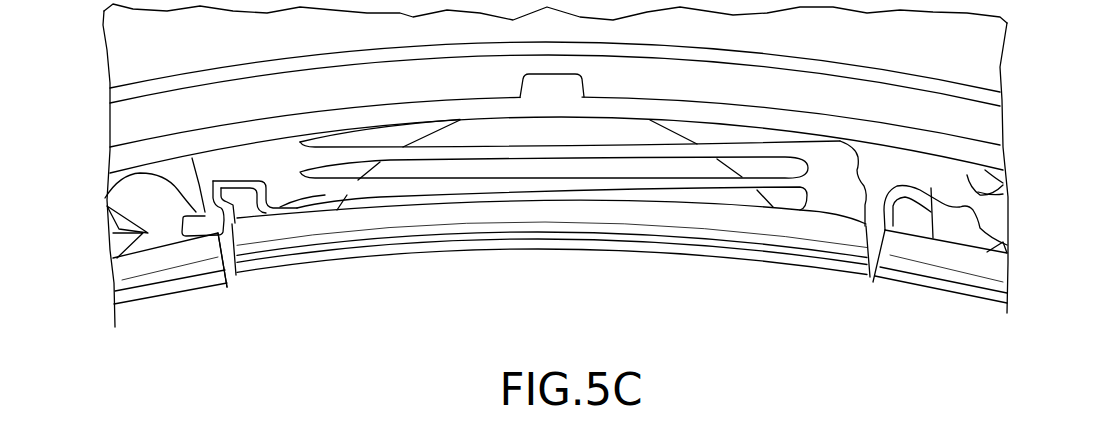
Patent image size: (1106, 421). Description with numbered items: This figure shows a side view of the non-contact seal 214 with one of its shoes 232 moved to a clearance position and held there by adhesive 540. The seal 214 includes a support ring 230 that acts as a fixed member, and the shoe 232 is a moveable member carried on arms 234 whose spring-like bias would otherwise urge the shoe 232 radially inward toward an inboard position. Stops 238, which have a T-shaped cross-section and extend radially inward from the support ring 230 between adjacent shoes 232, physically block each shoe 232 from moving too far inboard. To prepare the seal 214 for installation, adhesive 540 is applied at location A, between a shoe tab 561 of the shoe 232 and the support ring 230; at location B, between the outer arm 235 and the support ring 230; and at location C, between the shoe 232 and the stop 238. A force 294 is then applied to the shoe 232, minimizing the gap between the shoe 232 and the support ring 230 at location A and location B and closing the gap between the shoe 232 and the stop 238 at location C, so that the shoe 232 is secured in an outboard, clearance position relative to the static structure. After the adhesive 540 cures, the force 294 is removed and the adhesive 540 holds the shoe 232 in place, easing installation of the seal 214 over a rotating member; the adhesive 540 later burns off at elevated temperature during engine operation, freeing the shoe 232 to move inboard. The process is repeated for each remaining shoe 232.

The seal 214 is at (593, 114).
The support ring 230 is at (413, 109).
The shoe 232 is at (127, 303).
The arms 234 is at (702, 180).
The outer arm 235 is at (767, 150).
The stop 238 is at (205, 212).
The force 294 is at (553, 251).
The adhesive 540 is at (242, 180).
The shoe tab 561 is at (261, 180).
The location A is at (245, 167).
The location B is at (827, 141).
The location C is at (877, 212).